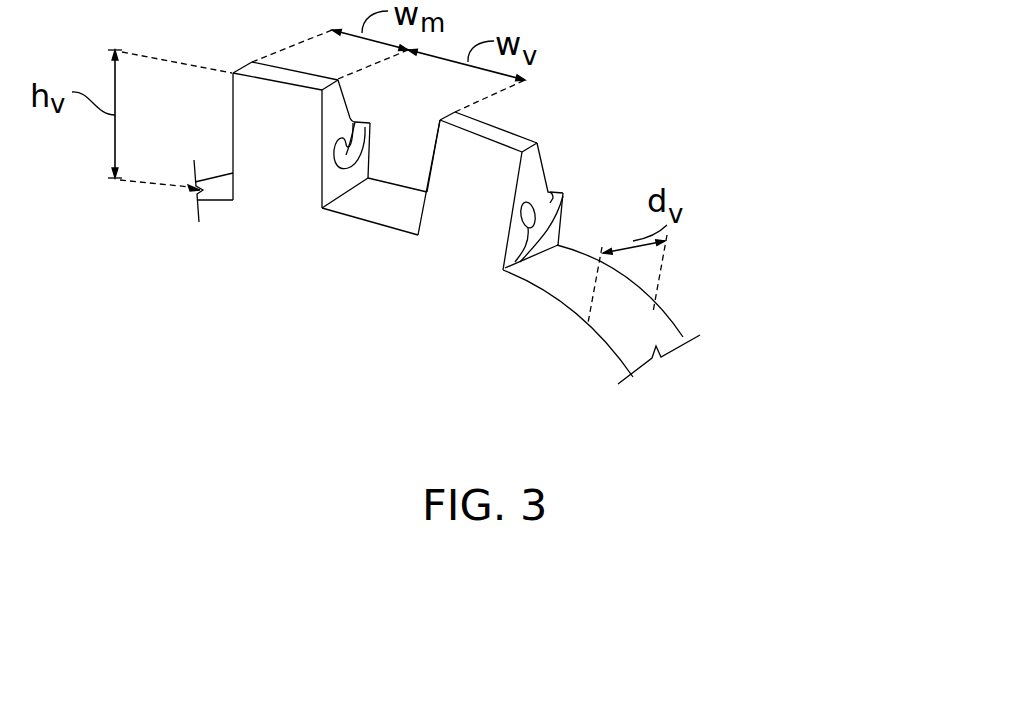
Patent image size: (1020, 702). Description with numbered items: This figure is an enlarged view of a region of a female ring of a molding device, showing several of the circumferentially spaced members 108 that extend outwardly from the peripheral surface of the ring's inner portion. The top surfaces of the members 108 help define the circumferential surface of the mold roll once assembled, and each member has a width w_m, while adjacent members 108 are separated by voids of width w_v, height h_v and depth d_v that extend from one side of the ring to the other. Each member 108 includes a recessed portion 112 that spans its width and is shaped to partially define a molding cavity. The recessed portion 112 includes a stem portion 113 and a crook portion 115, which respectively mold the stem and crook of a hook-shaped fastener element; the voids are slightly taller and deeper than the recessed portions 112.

The member 108 is at (511, 142).
The stem portion 113 is at (548, 168).
The recessed portion 112 is at (553, 192).
The crook portion 115 is at (512, 273).